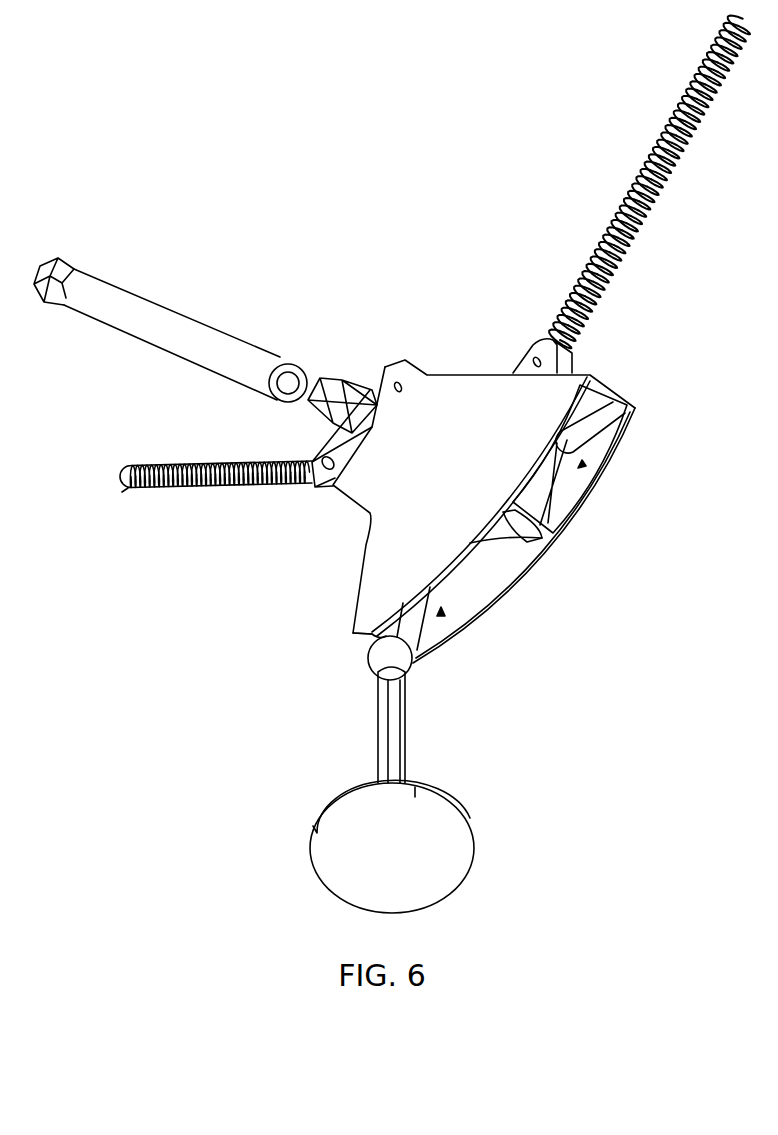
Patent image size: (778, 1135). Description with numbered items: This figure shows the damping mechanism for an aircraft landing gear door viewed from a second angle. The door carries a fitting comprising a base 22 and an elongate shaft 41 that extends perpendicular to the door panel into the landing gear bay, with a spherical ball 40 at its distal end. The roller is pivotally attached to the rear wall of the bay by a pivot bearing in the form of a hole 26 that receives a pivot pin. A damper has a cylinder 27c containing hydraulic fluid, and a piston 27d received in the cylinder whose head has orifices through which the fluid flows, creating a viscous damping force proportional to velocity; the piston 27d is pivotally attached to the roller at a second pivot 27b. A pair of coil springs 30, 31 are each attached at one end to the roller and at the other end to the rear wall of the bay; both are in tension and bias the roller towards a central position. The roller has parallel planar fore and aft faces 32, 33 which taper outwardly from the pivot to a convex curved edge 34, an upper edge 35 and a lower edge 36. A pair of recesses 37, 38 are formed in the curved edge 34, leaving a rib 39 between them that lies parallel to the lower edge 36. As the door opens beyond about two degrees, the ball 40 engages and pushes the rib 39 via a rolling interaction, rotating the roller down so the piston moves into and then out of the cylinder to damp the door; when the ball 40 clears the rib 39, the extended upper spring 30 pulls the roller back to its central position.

The base 22 is at (443, 797).
The hole 26 is at (399, 383).
The second pivot 27b is at (345, 382).
The cylinder 27c is at (203, 322).
The piston 27d is at (295, 380).
The upper coil spring 30 is at (622, 213).
The coil spring 31 is at (213, 487).
The fore face 32 is at (374, 538).
The aft face 33 is at (490, 572).
The convex curved edge 34 is at (550, 540).
The upper edge 35 is at (455, 374).
The lower edge 36 is at (358, 592).
The recess 37 is at (442, 616).
The recess 38 is at (583, 467).
The rib 39 is at (510, 516).
The spherical ball 40 is at (370, 672).
The elongate shaft 41 is at (378, 720).